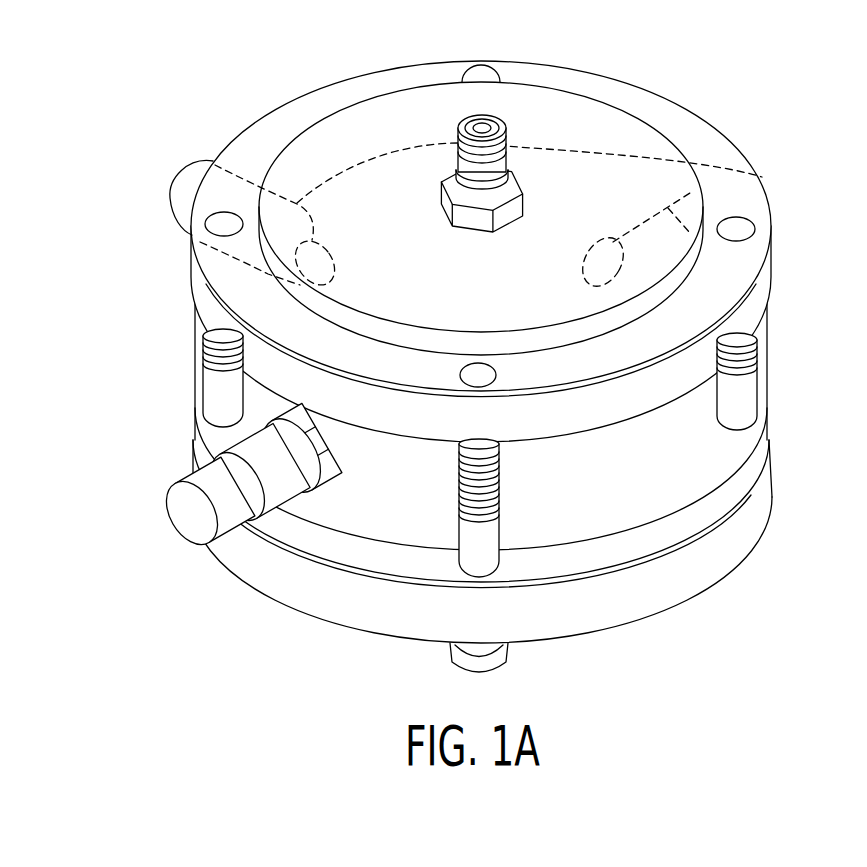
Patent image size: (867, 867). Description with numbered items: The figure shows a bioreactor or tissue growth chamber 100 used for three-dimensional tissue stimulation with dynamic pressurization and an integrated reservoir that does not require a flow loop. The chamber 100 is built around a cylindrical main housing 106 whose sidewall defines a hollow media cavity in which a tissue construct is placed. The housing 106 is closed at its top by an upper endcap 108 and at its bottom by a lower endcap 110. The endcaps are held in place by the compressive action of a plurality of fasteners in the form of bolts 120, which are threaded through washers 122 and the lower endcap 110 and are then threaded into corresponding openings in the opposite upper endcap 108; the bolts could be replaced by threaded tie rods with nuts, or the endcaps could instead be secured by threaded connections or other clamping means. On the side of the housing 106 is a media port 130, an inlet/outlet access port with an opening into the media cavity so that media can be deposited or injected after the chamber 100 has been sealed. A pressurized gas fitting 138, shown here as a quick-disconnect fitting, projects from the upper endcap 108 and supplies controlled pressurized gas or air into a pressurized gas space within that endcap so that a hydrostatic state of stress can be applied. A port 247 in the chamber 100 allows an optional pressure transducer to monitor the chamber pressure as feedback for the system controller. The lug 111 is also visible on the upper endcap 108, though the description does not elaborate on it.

The bioreactor chamber 100 is at (466, 349).
The main housing 106 is at (688, 428).
The upper endcap 108 is at (587, 190).
The lower endcap 110 is at (340, 605).
The side lug port 111 is at (172, 185).
The bolts 120 is at (738, 410).
The washers 122 is at (497, 652).
The media port 130 is at (190, 522).
The pressurized gas fitting 138 is at (505, 157).
The port 247 is at (762, 177).